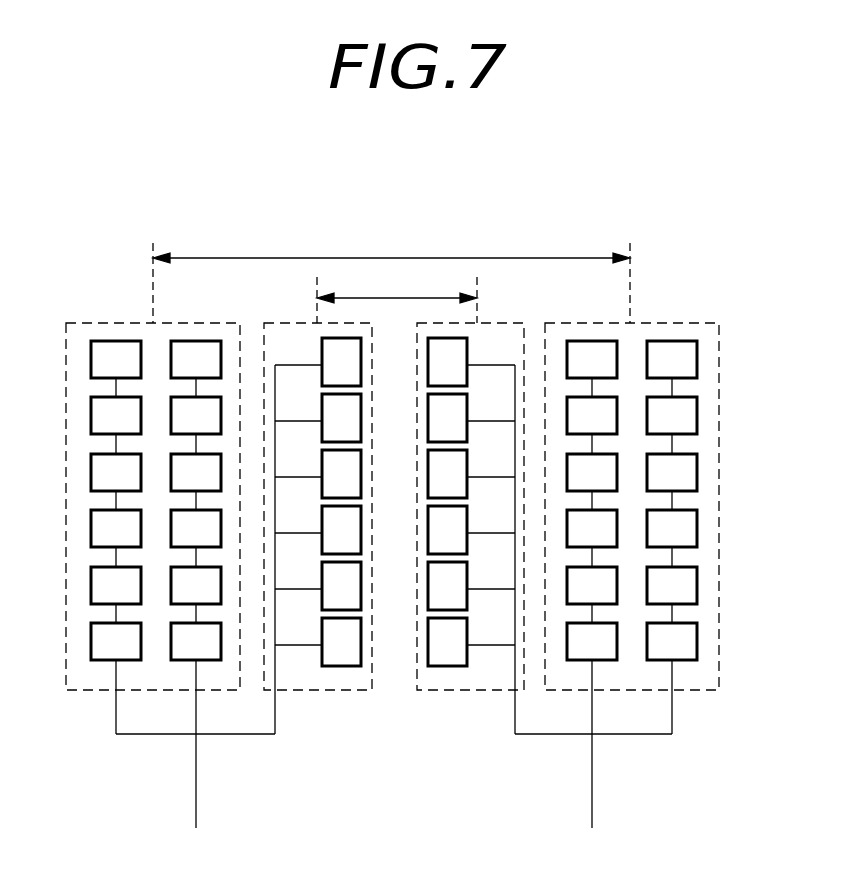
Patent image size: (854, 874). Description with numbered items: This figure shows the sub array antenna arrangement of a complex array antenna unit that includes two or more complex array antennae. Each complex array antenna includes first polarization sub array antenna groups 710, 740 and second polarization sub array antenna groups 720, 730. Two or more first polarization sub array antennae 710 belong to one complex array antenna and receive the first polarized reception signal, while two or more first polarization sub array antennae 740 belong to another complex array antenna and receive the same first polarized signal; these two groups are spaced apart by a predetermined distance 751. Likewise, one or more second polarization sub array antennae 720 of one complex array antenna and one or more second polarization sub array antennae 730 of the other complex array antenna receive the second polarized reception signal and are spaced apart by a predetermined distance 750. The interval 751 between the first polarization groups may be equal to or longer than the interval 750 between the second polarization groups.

The first polarization sub array antenna group 710 is at (80, 690).
The second polarization sub array antenna group 720 is at (325, 690).
The second polarization sub array antenna group 730 is at (467, 690).
The first polarization sub array antenna group 740 is at (693, 690).
The distance between second polarization sub array antenna groups 750 is at (397, 298).
The distance between first polarization sub array antenna groups 751 is at (391, 274).